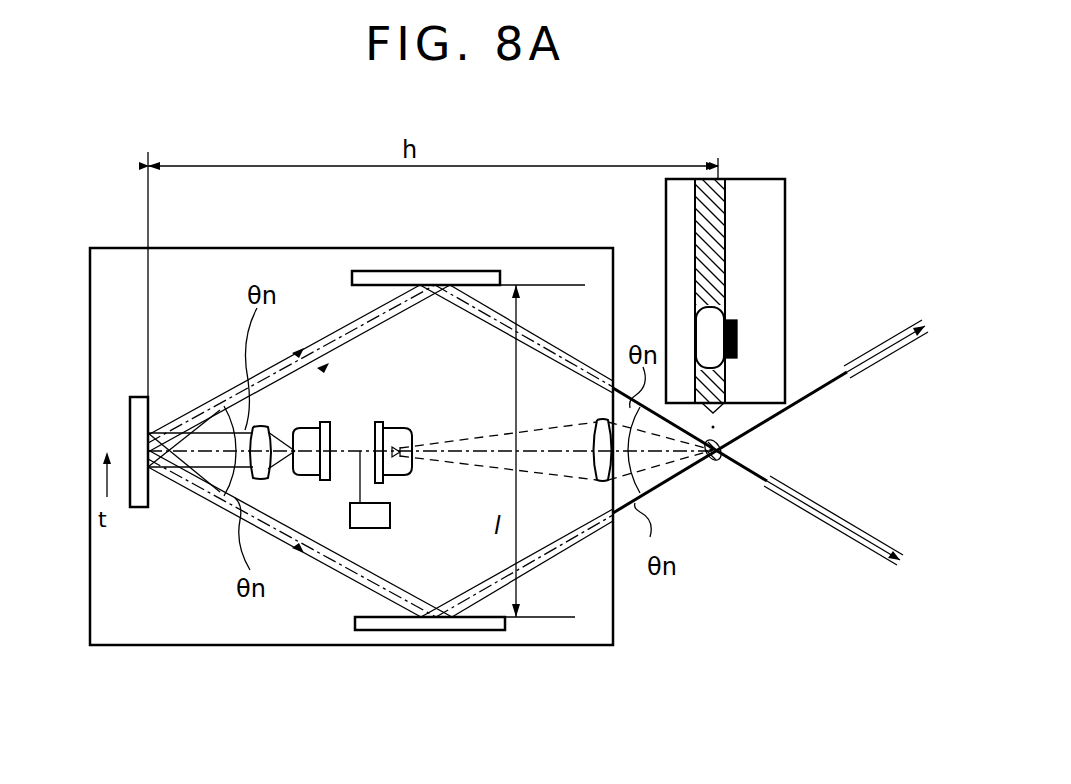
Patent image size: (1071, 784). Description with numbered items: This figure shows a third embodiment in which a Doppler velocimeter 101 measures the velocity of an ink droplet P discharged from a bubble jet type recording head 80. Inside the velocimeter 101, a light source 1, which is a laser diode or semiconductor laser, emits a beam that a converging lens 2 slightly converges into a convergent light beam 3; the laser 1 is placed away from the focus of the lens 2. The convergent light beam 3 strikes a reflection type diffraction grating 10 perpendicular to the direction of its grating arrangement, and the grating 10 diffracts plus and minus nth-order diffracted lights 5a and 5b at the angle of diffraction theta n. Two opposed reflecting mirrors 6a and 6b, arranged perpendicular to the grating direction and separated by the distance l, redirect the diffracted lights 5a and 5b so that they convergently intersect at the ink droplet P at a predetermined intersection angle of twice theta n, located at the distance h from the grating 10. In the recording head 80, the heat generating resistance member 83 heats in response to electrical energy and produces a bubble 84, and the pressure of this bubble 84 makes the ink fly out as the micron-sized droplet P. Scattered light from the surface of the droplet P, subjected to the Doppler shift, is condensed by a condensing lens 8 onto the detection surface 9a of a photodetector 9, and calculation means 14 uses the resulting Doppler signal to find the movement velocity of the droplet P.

The Doppler velocimeter 101 is at (118, 248).
The diffraction grating 10 is at (137, 432).
The diffracted light 5a is at (183, 477).
The diffracted light 5b is at (192, 420).
The convergent light beam 3 is at (263, 427).
The converging lens 2 is at (267, 433).
The light source 1 is at (307, 437).
The photodetector 9 is at (392, 438).
The detection surface 9a is at (398, 457).
The calculation means 14 is at (385, 517).
The reflecting mirror 6a is at (473, 630).
The reflecting mirror 6b is at (467, 271).
The condensing lens 8 is at (593, 442).
The recording head 80 is at (800, 212).
The bubble 84 is at (707, 340).
The heat generating resistance member 83 is at (737, 330).
The ink droplet P is at (737, 452).